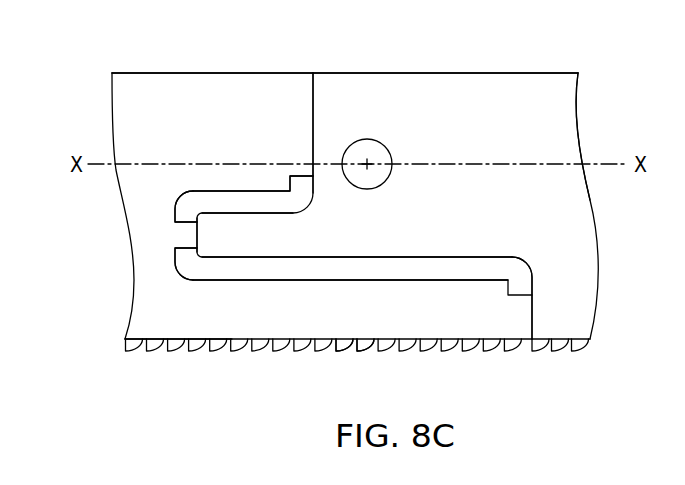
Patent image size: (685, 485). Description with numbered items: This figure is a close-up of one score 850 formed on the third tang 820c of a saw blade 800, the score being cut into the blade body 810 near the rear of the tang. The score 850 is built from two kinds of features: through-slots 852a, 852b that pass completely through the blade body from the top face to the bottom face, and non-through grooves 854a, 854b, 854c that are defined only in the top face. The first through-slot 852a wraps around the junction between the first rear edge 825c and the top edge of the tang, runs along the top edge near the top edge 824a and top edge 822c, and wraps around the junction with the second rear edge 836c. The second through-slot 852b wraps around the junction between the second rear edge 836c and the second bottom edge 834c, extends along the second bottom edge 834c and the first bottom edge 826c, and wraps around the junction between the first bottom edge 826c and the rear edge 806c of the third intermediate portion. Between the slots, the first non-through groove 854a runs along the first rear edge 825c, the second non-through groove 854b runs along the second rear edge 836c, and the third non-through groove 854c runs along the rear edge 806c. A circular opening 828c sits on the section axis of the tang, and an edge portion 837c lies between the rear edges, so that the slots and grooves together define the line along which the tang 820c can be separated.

The saw blade 800 is at (560, 107).
The blade body 810 is at (487, 73).
The top edge of tang 822c is at (393, 84).
The top edge of tang 824a is at (335, 73).
The first rear edge 825c is at (312, 147).
The first bottom edge 826c is at (398, 256).
The hole in tang 828c is at (388, 150).
The second bottom edge 834c is at (232, 257).
The second rear edge 836c is at (197, 238).
The edge portion of tang 837c is at (228, 213).
The score 850 is at (312, 118).
The first through-slot 852a is at (210, 195).
The second through-slot 852b is at (285, 282).
The first non-through groove 854a is at (312, 93).
The second non-through groove 854b is at (197, 243).
The third non-through groove 854c is at (531, 323).
The rear edge of third intermediate portion 806c is at (514, 324).
The third tang 820c is at (355, 329).